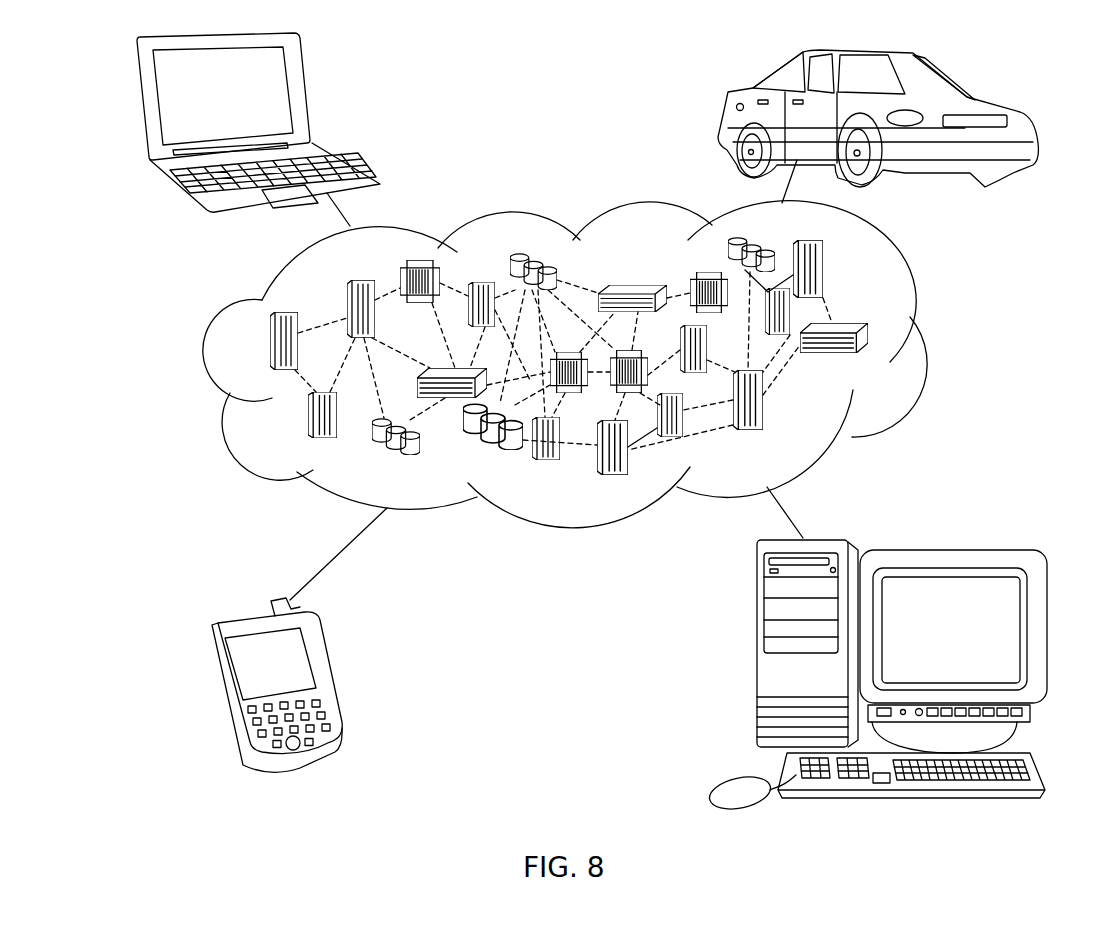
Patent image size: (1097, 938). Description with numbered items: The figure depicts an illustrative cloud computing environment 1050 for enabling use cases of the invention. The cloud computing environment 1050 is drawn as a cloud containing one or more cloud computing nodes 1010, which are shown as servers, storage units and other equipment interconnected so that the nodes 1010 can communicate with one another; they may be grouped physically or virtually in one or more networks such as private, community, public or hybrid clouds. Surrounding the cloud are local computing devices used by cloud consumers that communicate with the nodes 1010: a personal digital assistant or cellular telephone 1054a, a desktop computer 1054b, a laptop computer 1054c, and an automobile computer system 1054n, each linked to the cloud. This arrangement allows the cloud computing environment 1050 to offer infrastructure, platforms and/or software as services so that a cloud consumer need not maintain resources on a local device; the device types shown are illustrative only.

The cloud computing environment 1050 is at (913, 283).
The cloud computing nodes 1010 is at (883, 360).
The personal digital assistant or cellular telephone 1054a is at (325, 666).
The desktop computer 1054b is at (757, 657).
The laptop computer 1054c is at (303, 88).
The automobile computer system 1054n is at (733, 95).